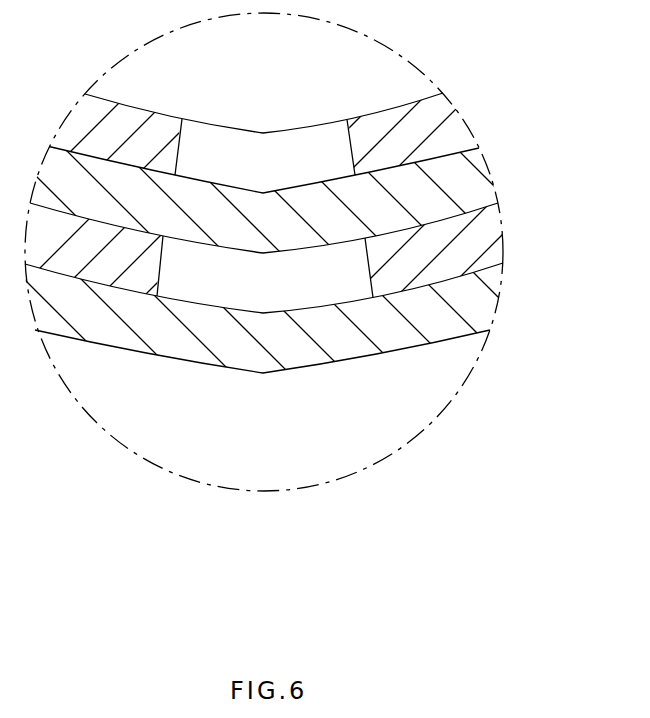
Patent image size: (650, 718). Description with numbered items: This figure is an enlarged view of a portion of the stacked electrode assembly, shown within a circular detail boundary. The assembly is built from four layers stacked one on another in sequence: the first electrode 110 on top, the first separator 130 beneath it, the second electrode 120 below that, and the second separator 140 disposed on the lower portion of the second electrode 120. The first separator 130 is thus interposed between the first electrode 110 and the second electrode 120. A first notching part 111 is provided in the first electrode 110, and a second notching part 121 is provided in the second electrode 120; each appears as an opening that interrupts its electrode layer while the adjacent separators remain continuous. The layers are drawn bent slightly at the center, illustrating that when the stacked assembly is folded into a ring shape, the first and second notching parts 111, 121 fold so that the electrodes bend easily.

The first electrode 110 is at (452, 122).
The first notching part 111 is at (347, 141).
The first separator 130 is at (475, 182).
The second electrode 120 is at (482, 247).
The second notching part 121 is at (366, 277).
The second separator 140 is at (475, 307).